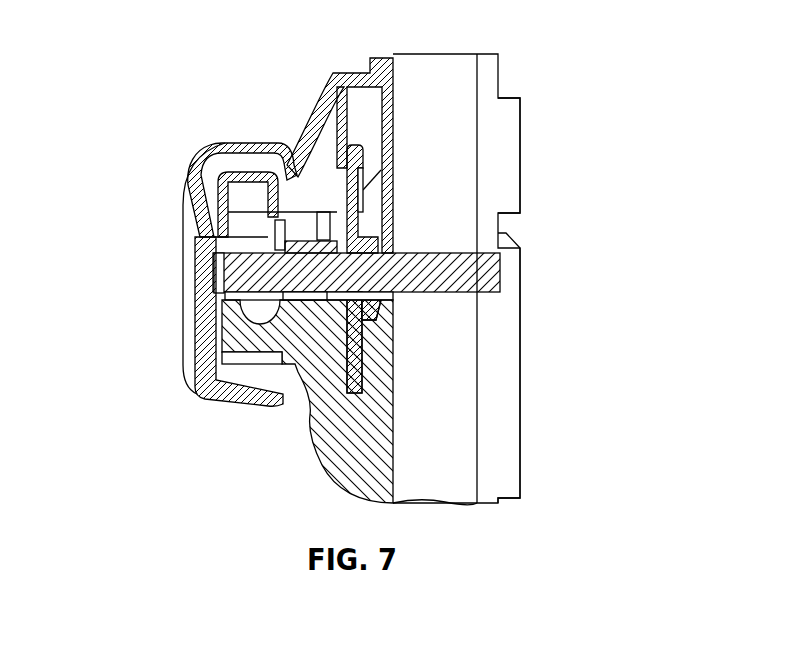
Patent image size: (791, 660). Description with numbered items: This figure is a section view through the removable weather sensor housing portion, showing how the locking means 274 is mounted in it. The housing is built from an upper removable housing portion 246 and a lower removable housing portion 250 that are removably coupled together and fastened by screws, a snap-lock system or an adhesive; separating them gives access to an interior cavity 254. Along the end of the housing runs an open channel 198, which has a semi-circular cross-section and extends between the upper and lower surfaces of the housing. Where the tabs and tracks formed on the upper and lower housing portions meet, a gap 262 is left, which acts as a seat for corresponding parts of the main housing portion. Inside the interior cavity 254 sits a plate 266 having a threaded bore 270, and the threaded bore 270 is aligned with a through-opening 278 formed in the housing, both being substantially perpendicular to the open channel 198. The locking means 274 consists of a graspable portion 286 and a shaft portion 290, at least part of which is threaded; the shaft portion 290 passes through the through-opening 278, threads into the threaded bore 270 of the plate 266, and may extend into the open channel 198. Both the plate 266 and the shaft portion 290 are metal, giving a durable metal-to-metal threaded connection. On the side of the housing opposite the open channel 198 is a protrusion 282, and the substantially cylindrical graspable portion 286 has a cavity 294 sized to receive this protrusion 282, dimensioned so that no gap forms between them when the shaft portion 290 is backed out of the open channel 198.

The open channel 198 is at (467, 120).
The upper removable housing portion 246 is at (502, 162).
The lower removable housing portion 250 is at (502, 450).
The interior cavity 254 is at (318, 226).
The gap 262 is at (519, 229).
The plate 266 is at (352, 170).
The threaded bore 270 is at (393, 252).
The locking means 274 is at (194, 113).
The through-opening 278 is at (398, 297).
The protrusion 282 is at (280, 178).
The graspable portion 286 is at (183, 236).
The shaft portion 290 is at (492, 282).
The cavity 294 is at (217, 170).